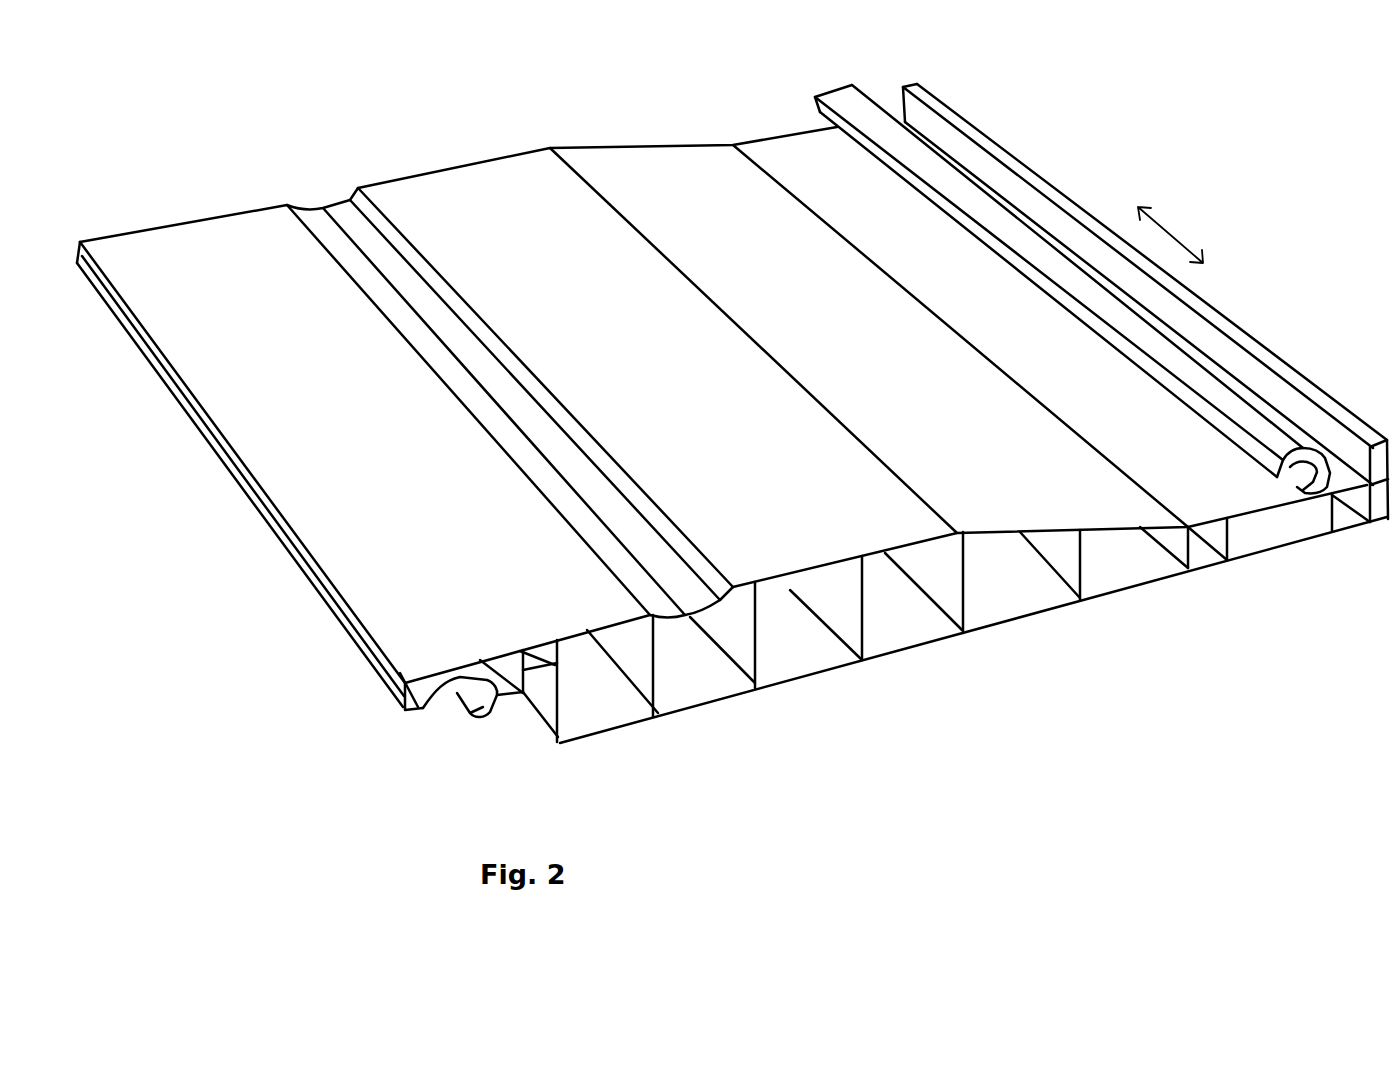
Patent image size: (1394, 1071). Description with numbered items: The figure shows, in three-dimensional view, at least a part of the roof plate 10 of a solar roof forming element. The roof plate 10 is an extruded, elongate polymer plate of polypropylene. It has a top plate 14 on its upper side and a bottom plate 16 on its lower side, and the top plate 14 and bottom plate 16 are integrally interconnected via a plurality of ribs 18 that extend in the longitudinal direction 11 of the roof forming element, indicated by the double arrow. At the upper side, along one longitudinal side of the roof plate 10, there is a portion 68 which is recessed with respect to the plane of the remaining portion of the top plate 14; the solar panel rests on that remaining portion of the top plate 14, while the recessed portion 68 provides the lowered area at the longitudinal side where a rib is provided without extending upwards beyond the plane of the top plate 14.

The roof plate 10 is at (1228, 609).
The longitudinal direction 11 is at (1165, 225).
The top plate 14 is at (468, 182).
The bottom plate 16 is at (900, 652).
The ribs 18 is at (753, 662).
The recessed portion 68 is at (729, 101).